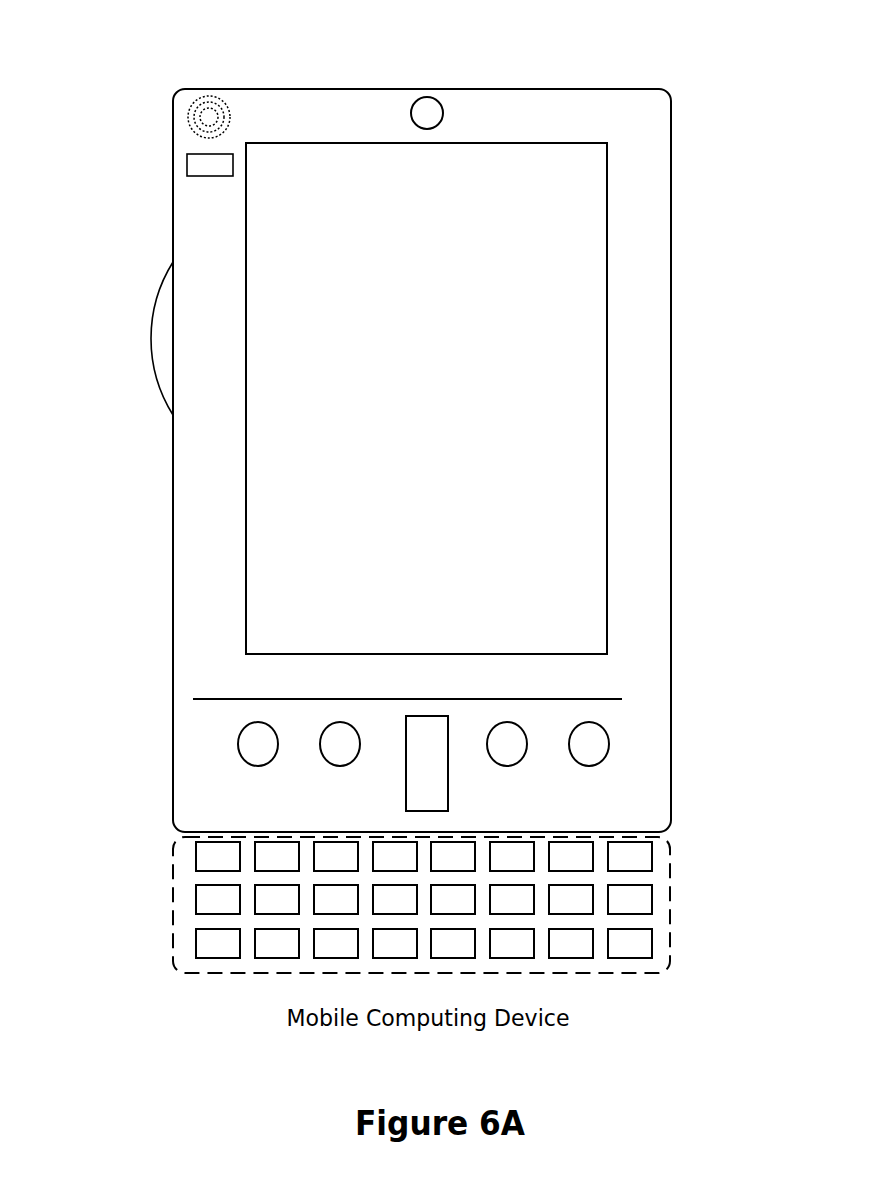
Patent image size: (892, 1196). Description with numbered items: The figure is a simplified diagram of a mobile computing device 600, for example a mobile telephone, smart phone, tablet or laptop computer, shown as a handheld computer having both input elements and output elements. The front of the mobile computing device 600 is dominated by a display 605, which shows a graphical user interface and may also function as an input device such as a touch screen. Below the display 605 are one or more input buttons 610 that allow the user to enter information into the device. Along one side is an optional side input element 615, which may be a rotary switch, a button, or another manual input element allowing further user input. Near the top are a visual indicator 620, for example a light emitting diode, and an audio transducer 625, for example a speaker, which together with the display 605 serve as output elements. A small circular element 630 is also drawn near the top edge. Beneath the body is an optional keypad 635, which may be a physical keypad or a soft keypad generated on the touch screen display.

The mobile computing device 600 is at (671, 118).
The display 605 is at (275, 493).
The input buttons 610 is at (406, 772).
The side input element 615 is at (150, 324).
The visual indicator 620 is at (187, 160).
The audio transducer 625 is at (190, 108).
The camera 630 is at (425, 97).
The keypad 635 is at (187, 904).